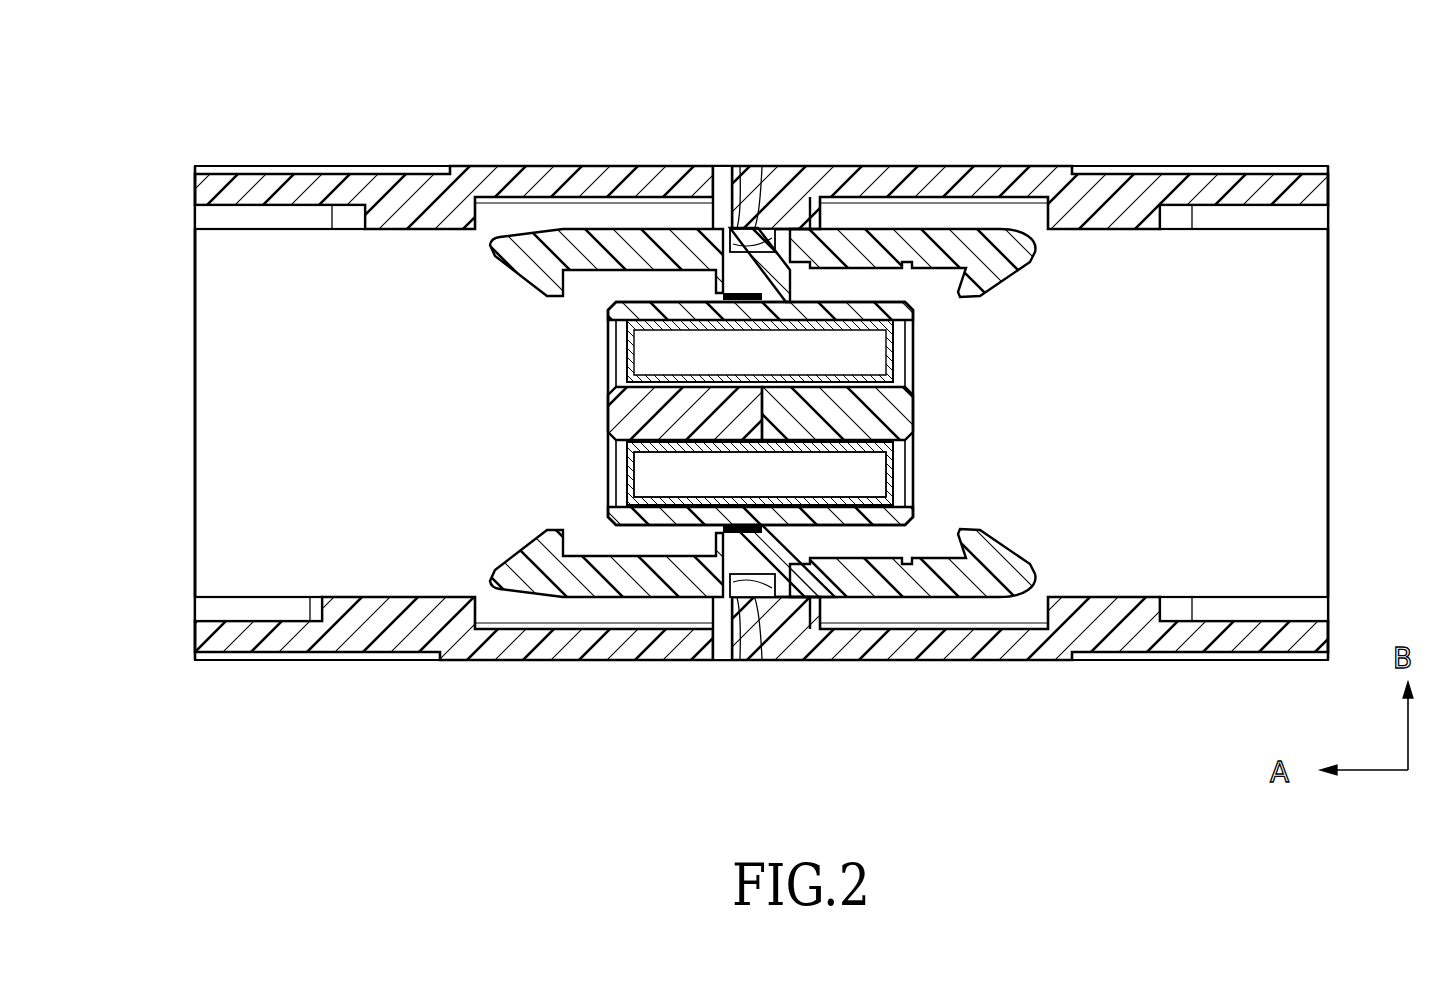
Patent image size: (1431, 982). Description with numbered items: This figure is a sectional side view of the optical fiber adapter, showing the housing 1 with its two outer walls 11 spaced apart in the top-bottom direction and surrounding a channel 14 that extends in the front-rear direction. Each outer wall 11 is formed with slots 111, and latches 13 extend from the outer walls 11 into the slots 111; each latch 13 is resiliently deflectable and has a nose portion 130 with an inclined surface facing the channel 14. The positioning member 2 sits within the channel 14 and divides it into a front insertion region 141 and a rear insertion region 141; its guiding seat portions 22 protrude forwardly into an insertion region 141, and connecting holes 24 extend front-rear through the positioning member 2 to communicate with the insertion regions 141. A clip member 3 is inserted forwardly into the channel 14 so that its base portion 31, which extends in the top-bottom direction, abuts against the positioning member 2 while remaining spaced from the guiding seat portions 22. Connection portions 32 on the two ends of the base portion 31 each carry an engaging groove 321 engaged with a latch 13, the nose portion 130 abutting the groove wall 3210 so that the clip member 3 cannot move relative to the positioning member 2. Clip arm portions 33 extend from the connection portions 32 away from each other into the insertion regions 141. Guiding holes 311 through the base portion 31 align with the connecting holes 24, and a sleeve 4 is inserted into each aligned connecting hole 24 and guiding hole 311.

The housing 1 is at (512, 124).
The outer wall 11 is at (903, 175).
The slot 111 is at (720, 170).
The latch 13 is at (760, 166).
The nose portion 130 is at (743, 166).
The channel 14 is at (1135, 535).
The insertion region 141 is at (230, 394).
The positioning member 2 is at (545, 390).
The guiding seat portion 22 is at (585, 415).
The connecting hole 24 is at (660, 500).
The clip member 3 is at (960, 382).
The base portion 31 is at (940, 413).
The guiding hole 311 is at (860, 347).
The connection portion 32 is at (733, 546).
The engaging groove 321 is at (788, 655).
The groove wall 3210 is at (770, 232).
The clip arm portion 33 is at (495, 258).
The sleeve 4 is at (640, 333).